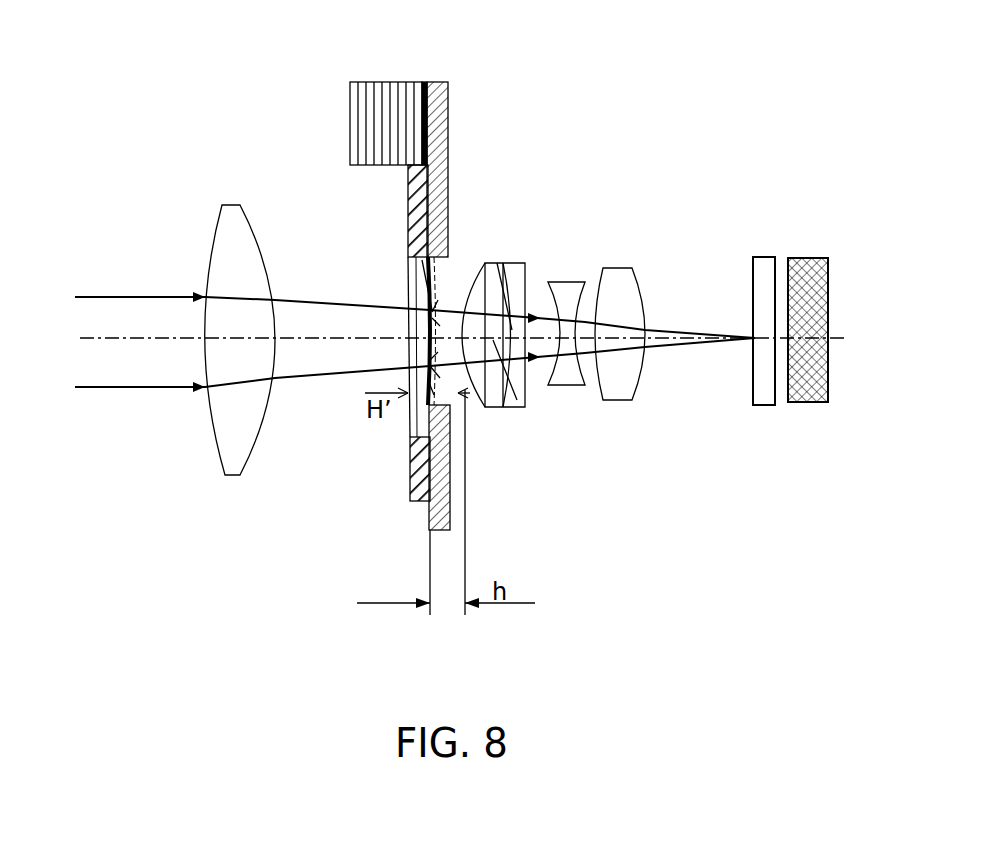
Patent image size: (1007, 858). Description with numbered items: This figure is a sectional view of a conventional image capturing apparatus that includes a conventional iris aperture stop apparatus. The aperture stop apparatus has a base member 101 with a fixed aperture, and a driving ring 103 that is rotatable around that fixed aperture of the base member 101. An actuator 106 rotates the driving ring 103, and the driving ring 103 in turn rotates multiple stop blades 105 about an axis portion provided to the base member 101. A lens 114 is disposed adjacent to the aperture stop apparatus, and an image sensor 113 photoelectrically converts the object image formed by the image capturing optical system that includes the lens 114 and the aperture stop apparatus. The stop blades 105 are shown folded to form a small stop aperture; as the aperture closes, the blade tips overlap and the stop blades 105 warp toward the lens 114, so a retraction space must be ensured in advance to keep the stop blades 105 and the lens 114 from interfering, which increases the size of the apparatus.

The base member 101 is at (448, 92).
The driving ring 103 is at (448, 167).
The stop blades 105 is at (432, 312).
The actuator 106 is at (383, 122).
The image sensor 113 is at (811, 275).
The lens 114 is at (478, 347).